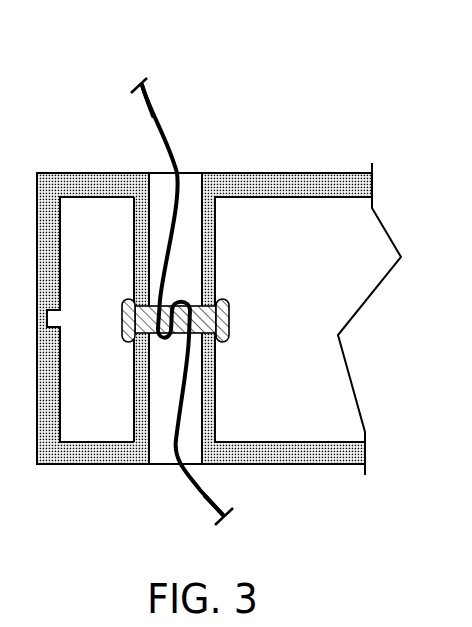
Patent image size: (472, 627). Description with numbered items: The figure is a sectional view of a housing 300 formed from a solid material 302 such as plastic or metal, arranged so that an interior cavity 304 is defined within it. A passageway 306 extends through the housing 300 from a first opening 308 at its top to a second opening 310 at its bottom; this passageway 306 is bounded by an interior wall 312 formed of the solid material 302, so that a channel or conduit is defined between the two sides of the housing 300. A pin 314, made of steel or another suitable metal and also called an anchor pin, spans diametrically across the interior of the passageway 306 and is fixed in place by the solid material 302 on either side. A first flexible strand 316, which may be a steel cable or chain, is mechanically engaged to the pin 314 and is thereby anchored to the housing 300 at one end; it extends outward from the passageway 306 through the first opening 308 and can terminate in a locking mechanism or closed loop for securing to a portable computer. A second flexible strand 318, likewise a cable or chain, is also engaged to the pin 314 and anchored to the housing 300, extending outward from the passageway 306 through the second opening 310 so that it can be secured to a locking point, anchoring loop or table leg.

The housing 300 is at (328, 58).
The solid material 302 is at (302, 173).
The interior cavity 304 is at (303, 391).
The passageway 306 is at (189, 180).
The first opening 308 is at (152, 173).
The second opening 310 is at (150, 466).
The interior wall 312 is at (148, 402).
The pin 314 is at (219, 303).
The first flexible strand 316 is at (150, 103).
The second flexible strand 318 is at (221, 510).